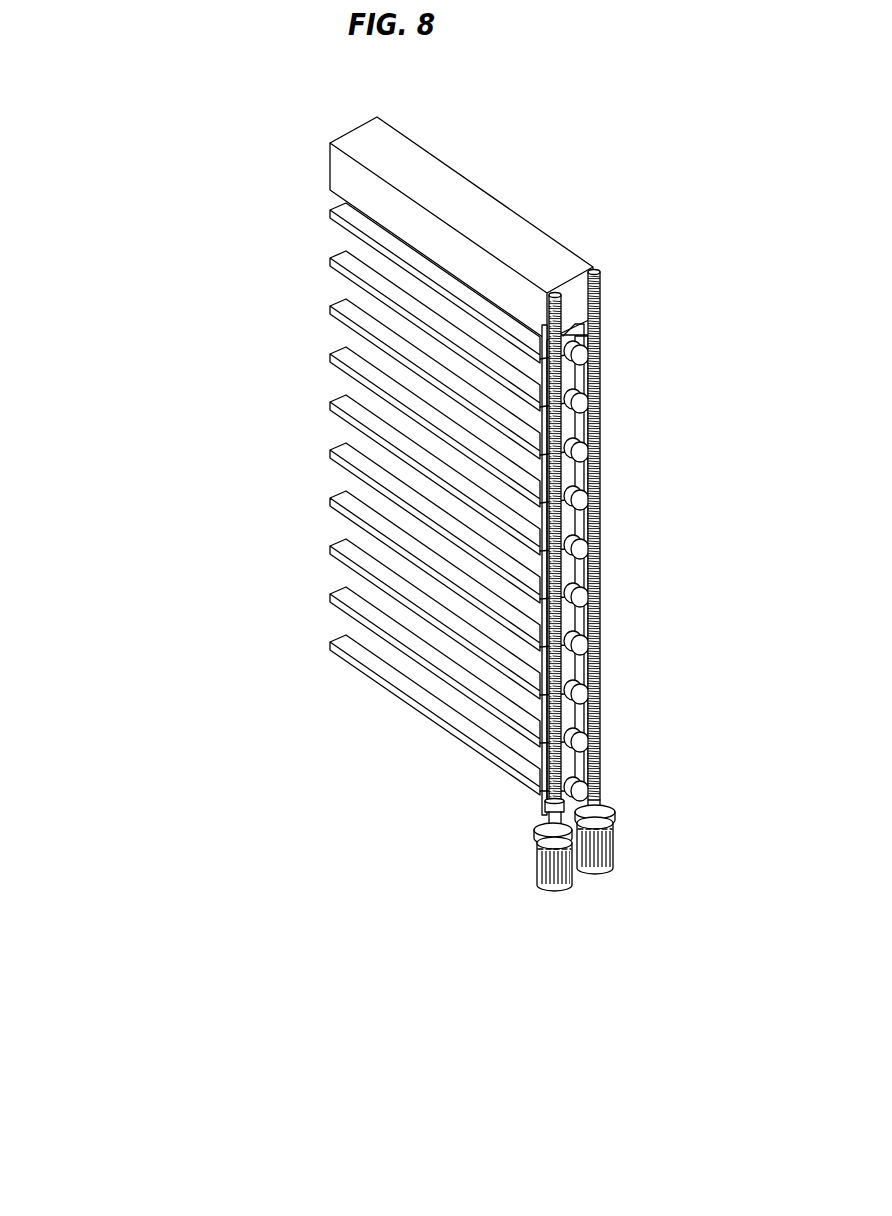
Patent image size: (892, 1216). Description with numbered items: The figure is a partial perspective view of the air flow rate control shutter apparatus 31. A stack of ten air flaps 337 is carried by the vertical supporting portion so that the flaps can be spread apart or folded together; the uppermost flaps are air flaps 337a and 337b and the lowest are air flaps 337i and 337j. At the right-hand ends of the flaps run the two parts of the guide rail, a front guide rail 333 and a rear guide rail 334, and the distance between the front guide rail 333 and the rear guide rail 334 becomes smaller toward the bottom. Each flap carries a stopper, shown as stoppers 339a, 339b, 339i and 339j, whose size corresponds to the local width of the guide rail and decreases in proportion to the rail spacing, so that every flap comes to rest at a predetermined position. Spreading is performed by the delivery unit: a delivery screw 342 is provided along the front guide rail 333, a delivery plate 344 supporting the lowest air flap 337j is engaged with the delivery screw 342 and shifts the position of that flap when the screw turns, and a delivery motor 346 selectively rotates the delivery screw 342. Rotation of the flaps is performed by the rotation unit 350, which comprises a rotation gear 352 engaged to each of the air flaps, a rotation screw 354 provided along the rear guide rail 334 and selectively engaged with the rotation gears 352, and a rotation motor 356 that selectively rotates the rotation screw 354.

The air flow rate control shutter apparatus 31 is at (538, 146).
The air flaps 337 is at (319, 499).
The air flap 337a is at (337, 227).
The air flap 337b is at (344, 276).
The air flap 337i is at (345, 592).
The air flap 337j is at (346, 685).
The front guide rail 333 is at (537, 787).
The rear guide rail 334 is at (582, 760).
The stopper 339a is at (593, 335).
The stopper 339b is at (592, 389).
The stopper 339i is at (587, 708).
The stopper 339j is at (593, 768).
The delivery screw 342 is at (593, 628).
The delivery plate 344 is at (580, 870).
The delivery motor 346 is at (557, 887).
The rotation unit 350 is at (501, 673).
The rotation gear 352 is at (504, 672).
The rotation screw 354 is at (596, 668).
The rotation motor 356 is at (608, 863).